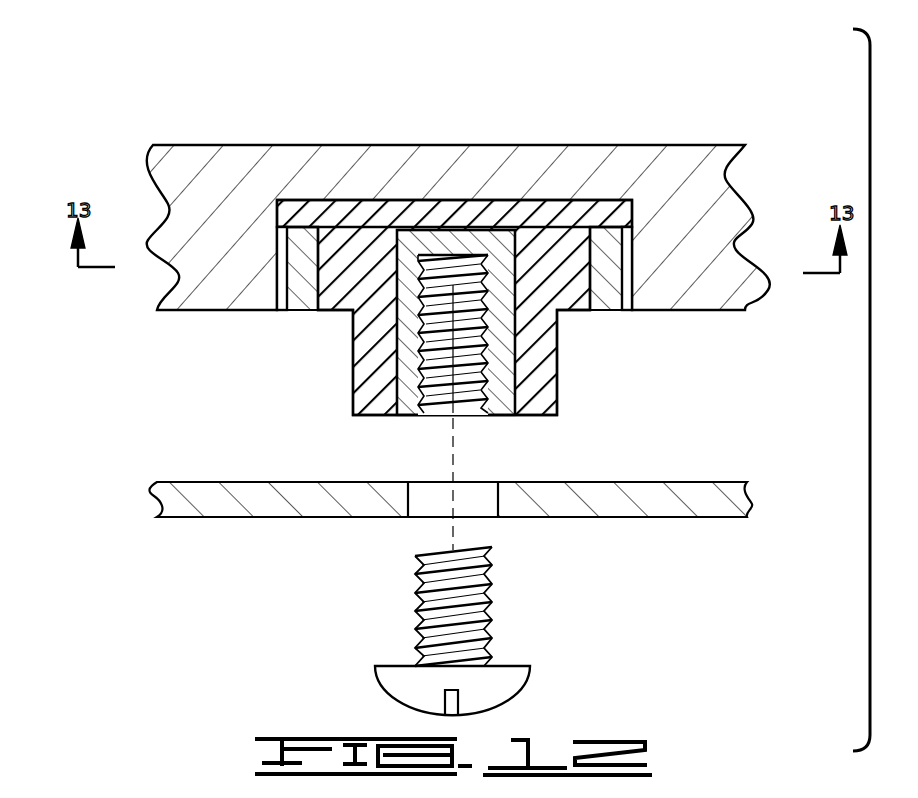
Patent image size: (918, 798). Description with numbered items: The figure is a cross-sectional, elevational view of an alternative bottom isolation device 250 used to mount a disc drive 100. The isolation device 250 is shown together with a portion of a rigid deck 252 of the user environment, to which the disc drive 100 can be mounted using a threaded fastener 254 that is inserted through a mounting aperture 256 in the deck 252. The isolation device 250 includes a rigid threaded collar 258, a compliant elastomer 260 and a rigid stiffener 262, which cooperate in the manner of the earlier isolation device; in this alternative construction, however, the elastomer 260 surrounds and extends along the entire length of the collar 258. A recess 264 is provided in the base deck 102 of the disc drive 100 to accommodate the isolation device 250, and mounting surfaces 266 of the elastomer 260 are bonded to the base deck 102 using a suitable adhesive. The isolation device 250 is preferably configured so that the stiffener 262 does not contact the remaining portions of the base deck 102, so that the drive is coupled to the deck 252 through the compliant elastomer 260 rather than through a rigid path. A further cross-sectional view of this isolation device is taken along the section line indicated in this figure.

The disc drive 100 is at (212, 82).
The base deck 102 is at (585, 162).
The bottom isolation device 250 is at (306, 330).
The rigid deck 252 is at (598, 488).
The threaded fastener 254 is at (408, 683).
The mounting aperture 256 is at (430, 470).
The rigid threaded collar 258 is at (497, 385).
The compliant elastomer 260 is at (360, 340).
The rigid stiffener 262 is at (612, 300).
The recess 264 is at (636, 255).
The mounting surfaces 266 is at (404, 200).